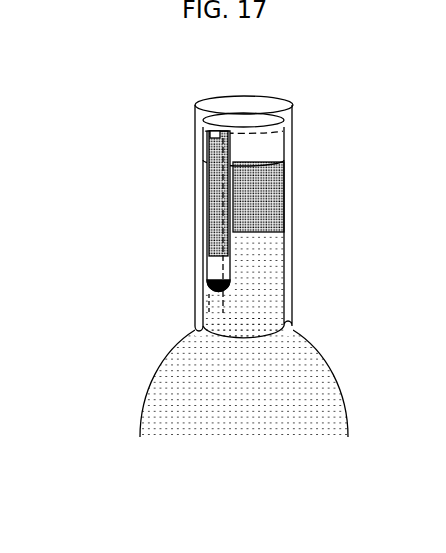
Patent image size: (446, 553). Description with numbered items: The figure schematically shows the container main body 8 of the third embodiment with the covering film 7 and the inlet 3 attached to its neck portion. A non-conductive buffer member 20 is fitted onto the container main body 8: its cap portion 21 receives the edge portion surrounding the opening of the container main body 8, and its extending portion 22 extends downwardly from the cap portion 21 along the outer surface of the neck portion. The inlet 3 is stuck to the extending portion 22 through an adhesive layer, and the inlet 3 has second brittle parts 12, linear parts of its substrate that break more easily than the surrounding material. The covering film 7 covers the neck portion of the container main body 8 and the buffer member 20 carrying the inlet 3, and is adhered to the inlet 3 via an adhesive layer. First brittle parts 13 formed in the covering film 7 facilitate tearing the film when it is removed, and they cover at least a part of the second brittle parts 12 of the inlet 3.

The inlet 3 is at (210, 212).
The covering film 7 is at (266, 95).
The container main body 8 is at (333, 375).
The second brittle parts 12 is at (209, 155).
The first brittle parts 13 is at (208, 265).
The buffer member 20 is at (228, 112).
The cap portion 21 is at (285, 135).
The extending portion 22 is at (237, 203).